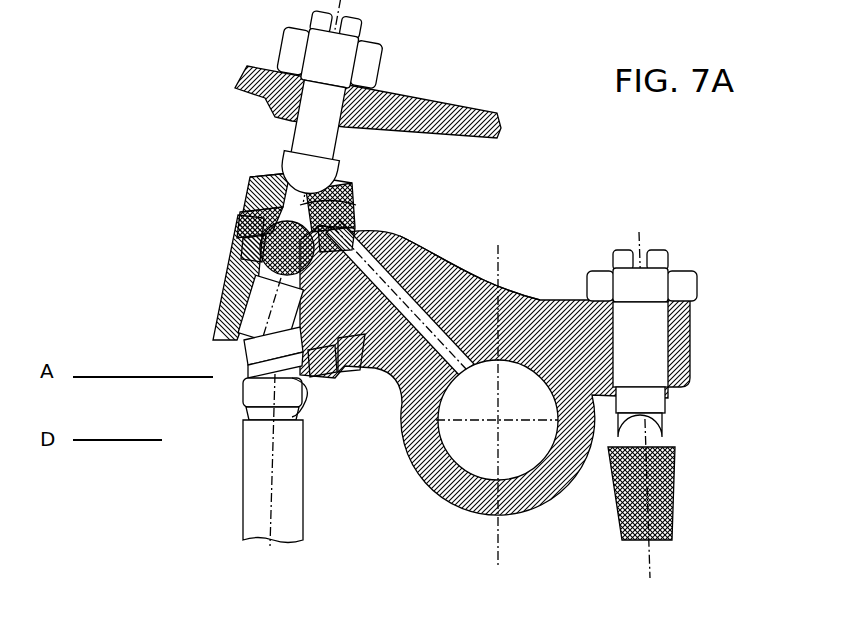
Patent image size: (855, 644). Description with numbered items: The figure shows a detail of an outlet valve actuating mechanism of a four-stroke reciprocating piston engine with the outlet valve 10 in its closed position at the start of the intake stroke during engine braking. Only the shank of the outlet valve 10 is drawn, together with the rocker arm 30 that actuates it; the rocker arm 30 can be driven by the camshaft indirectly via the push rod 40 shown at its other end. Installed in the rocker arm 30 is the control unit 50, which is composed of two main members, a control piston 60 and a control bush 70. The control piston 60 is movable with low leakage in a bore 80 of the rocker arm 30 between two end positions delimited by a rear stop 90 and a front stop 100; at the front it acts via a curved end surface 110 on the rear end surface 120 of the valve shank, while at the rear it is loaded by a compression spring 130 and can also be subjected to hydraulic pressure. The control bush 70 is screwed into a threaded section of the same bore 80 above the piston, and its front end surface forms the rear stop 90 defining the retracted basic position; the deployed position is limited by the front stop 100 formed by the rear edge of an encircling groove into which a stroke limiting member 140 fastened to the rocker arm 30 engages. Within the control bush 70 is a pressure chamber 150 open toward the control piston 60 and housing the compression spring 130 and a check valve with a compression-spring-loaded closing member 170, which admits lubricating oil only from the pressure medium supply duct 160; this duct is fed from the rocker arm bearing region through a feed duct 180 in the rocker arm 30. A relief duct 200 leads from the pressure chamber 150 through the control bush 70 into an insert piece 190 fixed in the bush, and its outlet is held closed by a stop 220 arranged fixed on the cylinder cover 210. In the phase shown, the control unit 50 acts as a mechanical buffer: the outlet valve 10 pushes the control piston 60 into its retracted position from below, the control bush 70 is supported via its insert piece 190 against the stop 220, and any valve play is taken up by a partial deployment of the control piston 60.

The outlet valve 10 is at (253, 497).
The rocker arm 30 is at (418, 268).
The push rod 40 is at (663, 522).
The control unit 50 is at (242, 267).
The control piston 60 is at (230, 302).
The control bush 70 is at (255, 197).
The bore 80 is at (257, 325).
The rear stop 90 is at (328, 374).
The front stop 100 is at (248, 346).
The curved end surface 110 is at (237, 377).
The rear end surface 120 is at (297, 417).
The compression spring 130 is at (253, 258).
The stroke limiting member 140 is at (352, 380).
The pressure chamber 150 is at (388, 243).
The pressure medium supply duct 160 is at (250, 217).
The closing member 170 is at (353, 216).
The feed duct 180 is at (458, 283).
The insert piece 190 is at (342, 189).
The relief duct 200 is at (270, 181).
The cylinder cover 210 is at (424, 108).
The stop 220 is at (322, 178).